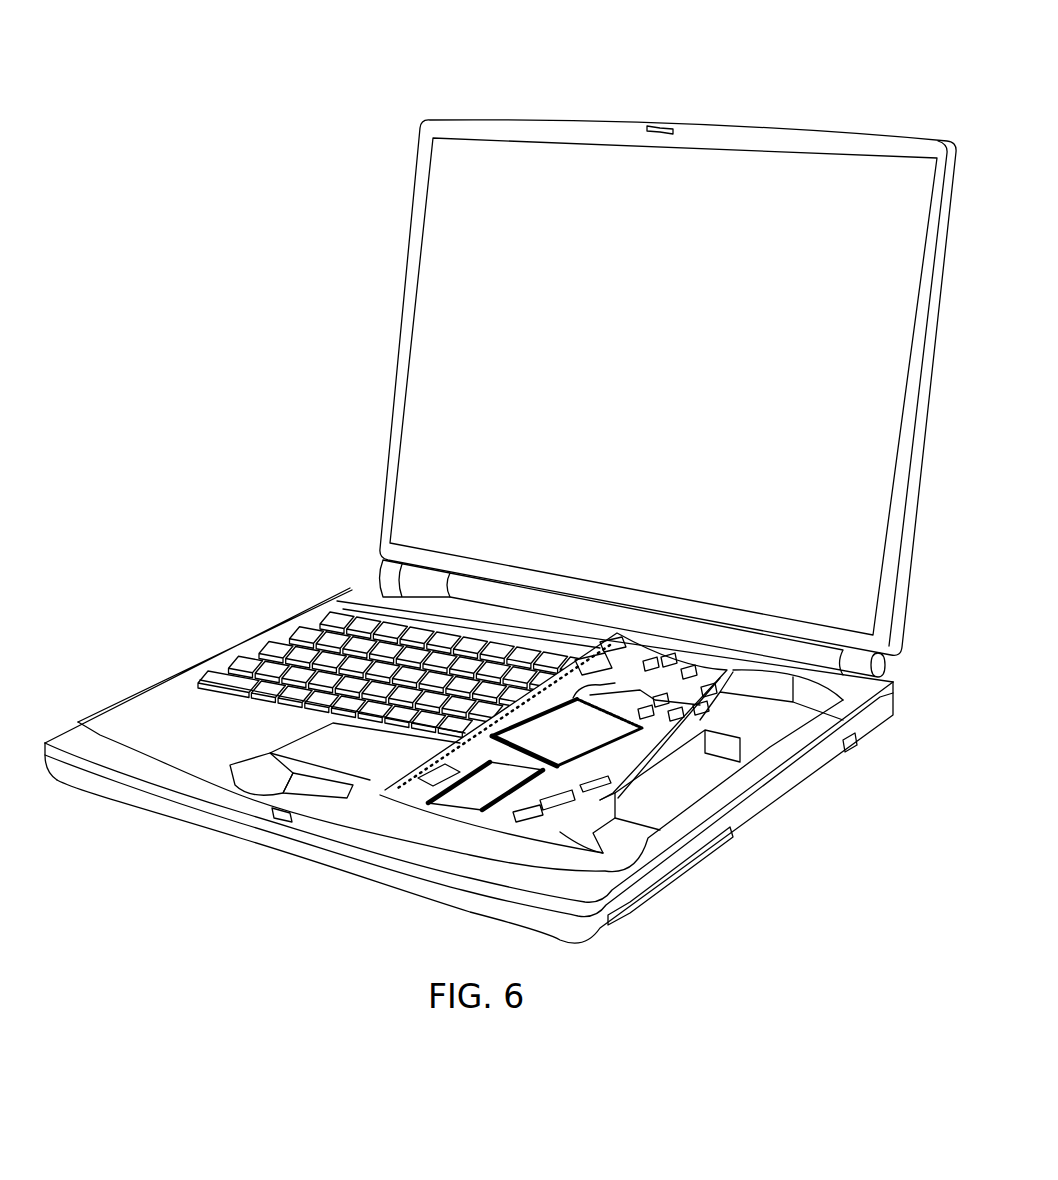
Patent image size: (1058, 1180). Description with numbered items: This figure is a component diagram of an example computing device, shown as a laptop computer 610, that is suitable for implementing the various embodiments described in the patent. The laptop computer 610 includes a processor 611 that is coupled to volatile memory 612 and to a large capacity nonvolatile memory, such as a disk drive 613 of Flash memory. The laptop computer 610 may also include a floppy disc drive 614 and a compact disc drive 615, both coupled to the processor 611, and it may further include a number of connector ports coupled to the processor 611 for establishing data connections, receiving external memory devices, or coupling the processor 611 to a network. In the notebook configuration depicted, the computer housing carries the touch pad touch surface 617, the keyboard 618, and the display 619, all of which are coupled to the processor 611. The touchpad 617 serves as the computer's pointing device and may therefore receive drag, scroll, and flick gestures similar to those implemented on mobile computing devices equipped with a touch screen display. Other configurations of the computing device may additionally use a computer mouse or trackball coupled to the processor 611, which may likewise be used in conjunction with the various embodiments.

The laptop computer 610 is at (503, 480).
The processor 611 is at (580, 743).
The volatile memory 612 is at (487, 790).
The disk drive 613 is at (622, 835).
The floppy disc drive 614 is at (702, 778).
The compact disc (CD) drive 615 is at (778, 715).
The touch pad touch surface 617 is at (303, 752).
The keyboard 618 is at (253, 657).
The display 619 is at (881, 584).